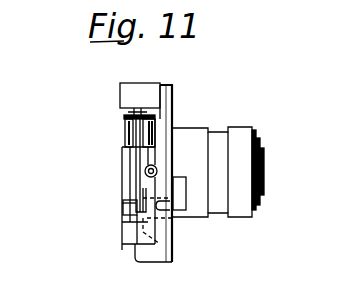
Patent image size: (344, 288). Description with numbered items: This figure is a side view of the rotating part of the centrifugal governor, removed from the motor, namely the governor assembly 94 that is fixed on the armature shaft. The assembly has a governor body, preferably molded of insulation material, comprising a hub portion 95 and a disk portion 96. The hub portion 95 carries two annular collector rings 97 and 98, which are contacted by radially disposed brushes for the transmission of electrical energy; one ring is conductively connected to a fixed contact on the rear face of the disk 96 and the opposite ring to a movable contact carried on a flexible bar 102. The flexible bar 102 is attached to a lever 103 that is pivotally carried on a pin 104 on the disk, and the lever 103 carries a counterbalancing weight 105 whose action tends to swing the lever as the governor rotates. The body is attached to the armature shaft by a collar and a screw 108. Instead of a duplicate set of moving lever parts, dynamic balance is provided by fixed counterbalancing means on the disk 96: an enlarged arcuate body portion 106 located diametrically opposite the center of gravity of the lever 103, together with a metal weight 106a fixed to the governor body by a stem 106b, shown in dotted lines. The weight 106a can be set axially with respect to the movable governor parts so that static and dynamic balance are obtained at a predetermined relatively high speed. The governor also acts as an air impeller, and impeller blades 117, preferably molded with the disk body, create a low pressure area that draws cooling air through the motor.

The governor assembly 94 is at (175, 88).
The hub portion 95 is at (205, 127).
The disk portion 96 is at (175, 98).
The collector ring 97 is at (197, 211).
The collector ring 98 is at (242, 216).
The flexible bar 102 is at (123, 117).
The lever 103 is at (144, 170).
The pin 104 is at (125, 135).
The counterbalancing weight 105 is at (126, 189).
The enlarged arcuate body portion 106 is at (141, 256).
The metal weight 106a is at (127, 233).
The stem 106b is at (175, 247).
The screw 108 is at (127, 177).
The impeller blades 117 is at (128, 92).